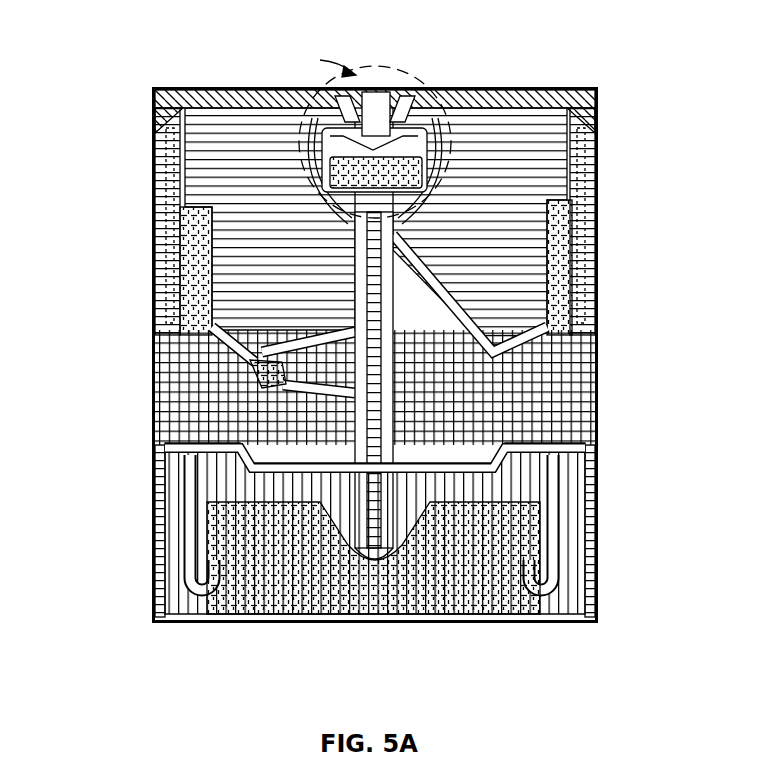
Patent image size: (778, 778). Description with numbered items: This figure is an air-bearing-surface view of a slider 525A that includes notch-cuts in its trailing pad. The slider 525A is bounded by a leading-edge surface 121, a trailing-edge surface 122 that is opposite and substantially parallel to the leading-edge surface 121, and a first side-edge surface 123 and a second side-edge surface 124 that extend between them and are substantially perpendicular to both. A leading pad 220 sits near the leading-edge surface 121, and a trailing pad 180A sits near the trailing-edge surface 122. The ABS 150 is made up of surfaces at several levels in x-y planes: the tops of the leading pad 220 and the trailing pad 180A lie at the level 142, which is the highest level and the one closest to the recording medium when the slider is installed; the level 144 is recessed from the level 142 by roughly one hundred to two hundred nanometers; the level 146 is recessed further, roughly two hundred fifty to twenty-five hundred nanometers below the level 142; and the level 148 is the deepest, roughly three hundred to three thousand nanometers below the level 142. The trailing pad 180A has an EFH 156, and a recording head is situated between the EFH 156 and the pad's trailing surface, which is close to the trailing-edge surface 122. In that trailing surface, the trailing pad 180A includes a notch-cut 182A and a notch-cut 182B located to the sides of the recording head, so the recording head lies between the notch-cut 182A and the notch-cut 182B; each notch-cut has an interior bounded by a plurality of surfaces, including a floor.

The slider 525A is at (140, 34).
The leading-edge surface 121 is at (303, 628).
The trailing-edge surface 122 is at (464, 76).
The first side-edge surface 123 is at (146, 320).
The second side-edge surface 124 is at (606, 320).
The level 142 is at (200, 477).
The level 144 is at (445, 603).
The level 146 is at (513, 130).
The level 148 is at (158, 372).
The ABS 150 is at (626, 452).
The EFH 156 is at (333, 143).
The trailing pad 180A is at (420, 92).
The notch-cut 182A is at (313, 112).
The notch-cut 182B is at (440, 110).
The leading pad 220 is at (462, 490).